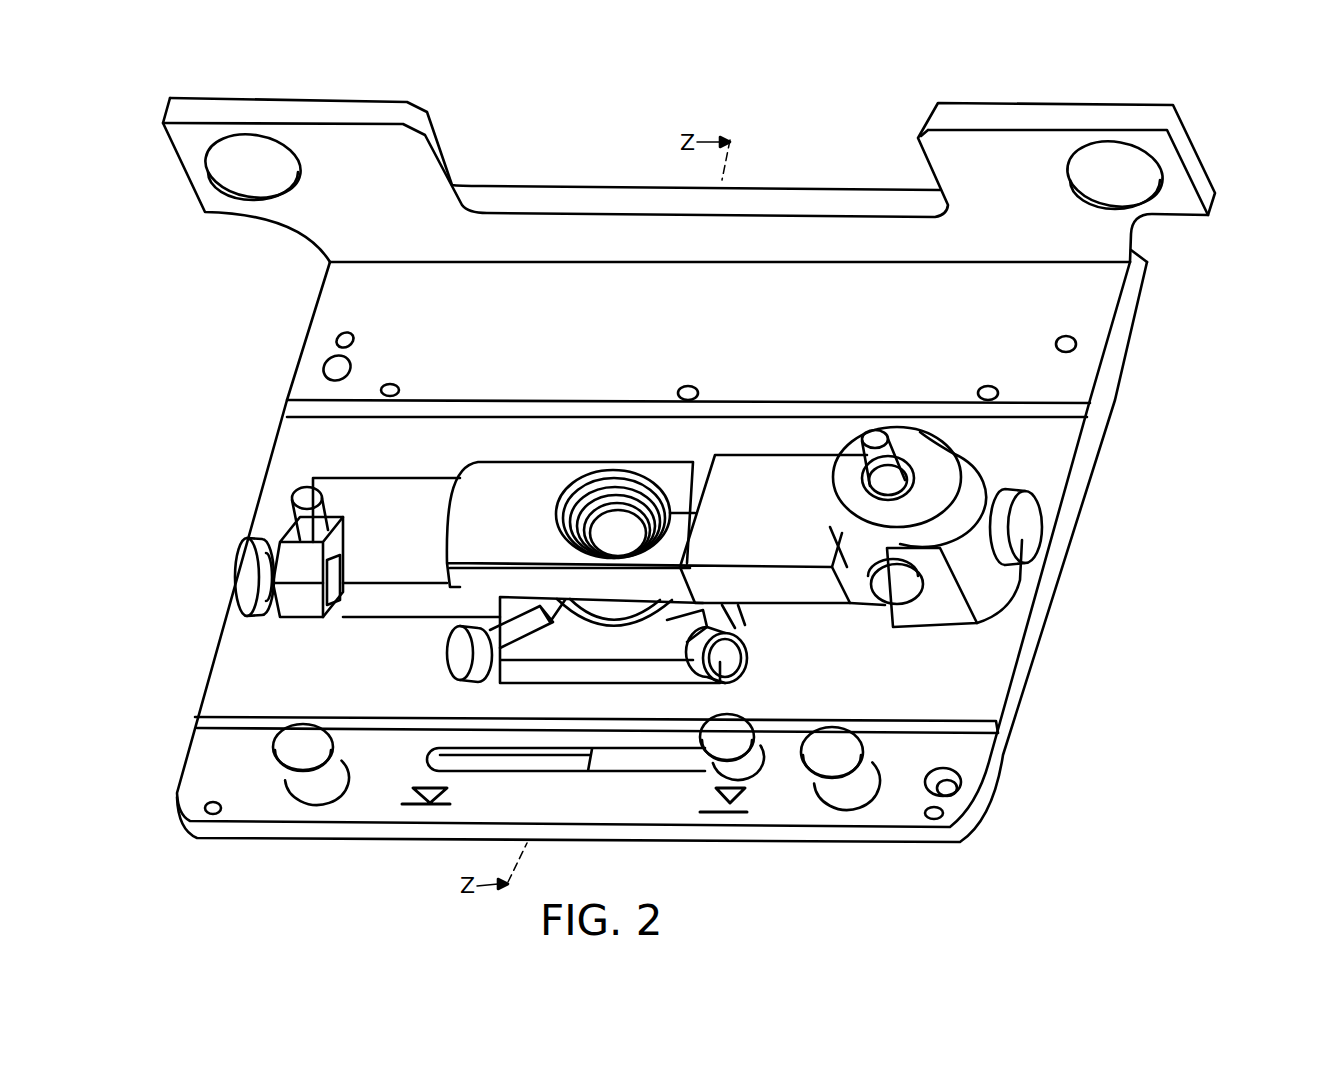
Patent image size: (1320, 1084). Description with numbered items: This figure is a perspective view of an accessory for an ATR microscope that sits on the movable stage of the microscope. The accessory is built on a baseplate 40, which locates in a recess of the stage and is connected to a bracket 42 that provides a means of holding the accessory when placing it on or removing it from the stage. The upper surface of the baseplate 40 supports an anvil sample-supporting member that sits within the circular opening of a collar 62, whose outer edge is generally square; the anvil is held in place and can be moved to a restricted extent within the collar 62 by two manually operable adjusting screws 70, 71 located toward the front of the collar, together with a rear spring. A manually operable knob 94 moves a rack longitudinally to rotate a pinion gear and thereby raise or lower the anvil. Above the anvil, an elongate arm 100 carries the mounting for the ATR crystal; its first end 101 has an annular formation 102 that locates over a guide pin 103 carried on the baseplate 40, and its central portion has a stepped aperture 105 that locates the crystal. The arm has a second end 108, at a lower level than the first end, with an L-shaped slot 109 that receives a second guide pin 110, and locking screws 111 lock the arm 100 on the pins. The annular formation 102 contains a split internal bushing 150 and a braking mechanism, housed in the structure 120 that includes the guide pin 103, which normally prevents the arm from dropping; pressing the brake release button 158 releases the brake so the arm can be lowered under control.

The baseplate 40 is at (1022, 583).
The bracket 42 is at (1197, 172).
The collar 62 is at (587, 648).
The adjusting screw 70 is at (455, 657).
The adjusting screw 71 is at (730, 663).
The knob 94 is at (755, 778).
The arm 100 is at (510, 460).
The first end 101 is at (855, 612).
The annular formation 102 is at (940, 462).
The guide pin 103 is at (876, 432).
The aperture 105 is at (556, 512).
The second end 108 is at (278, 627).
The L-shaped slot 109 is at (332, 612).
The second guide pin 110 is at (302, 492).
The locking screws 111 is at (1043, 525).
The structure 120 is at (990, 593).
The split internal bushing 150 is at (866, 484).
The brake release button 158 is at (900, 600).